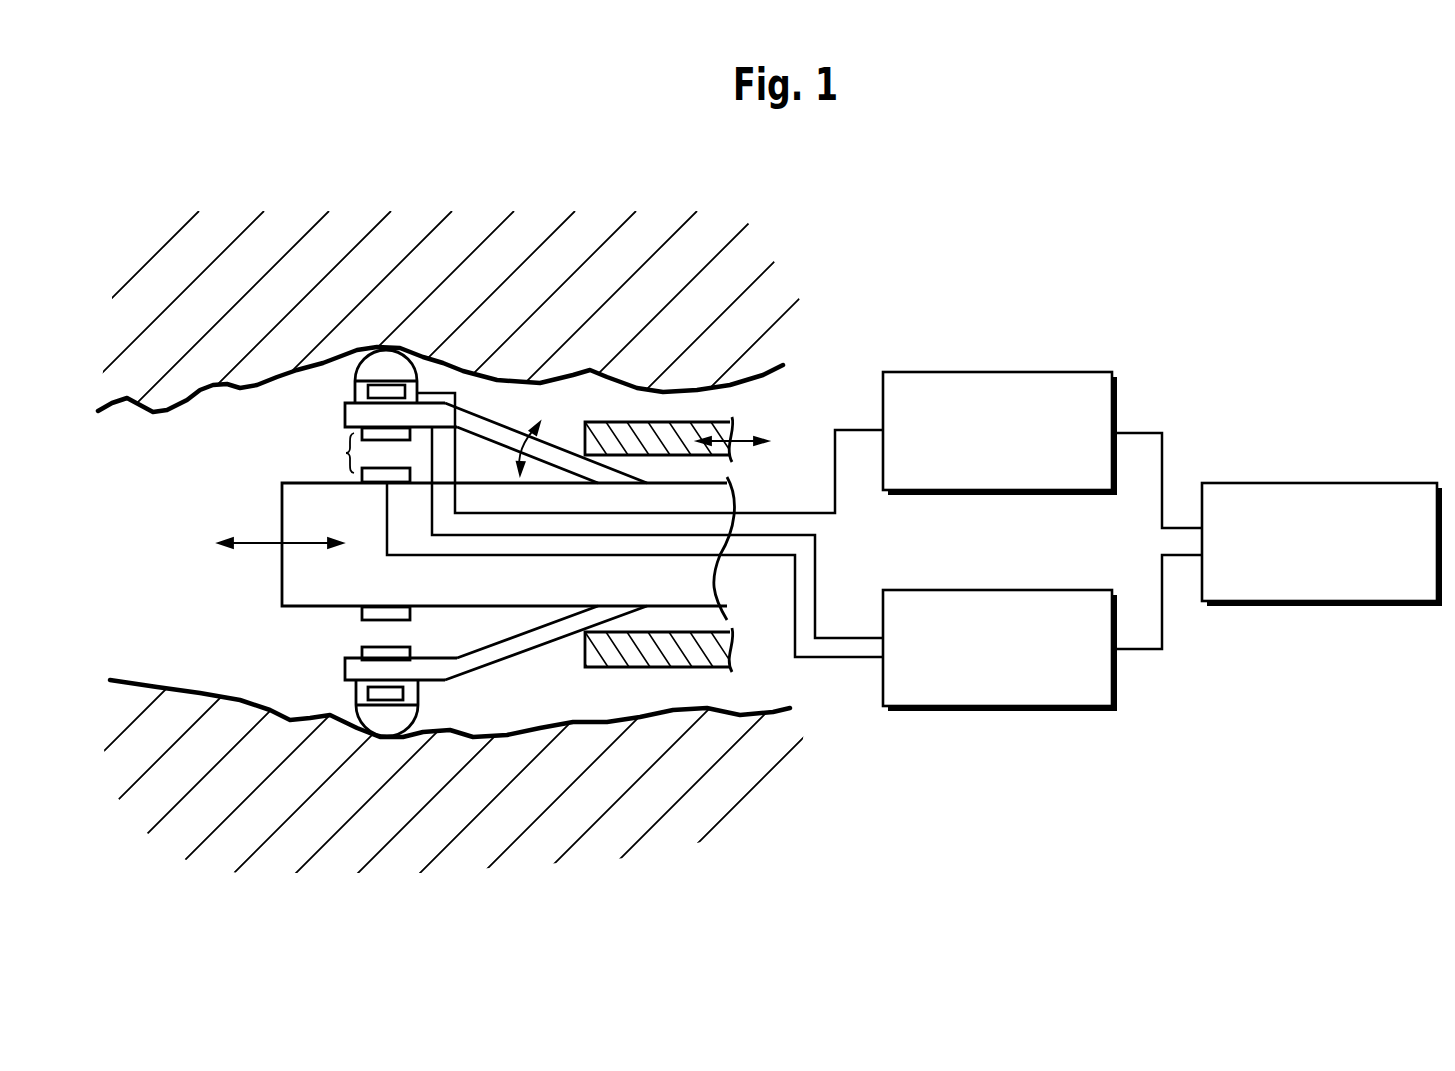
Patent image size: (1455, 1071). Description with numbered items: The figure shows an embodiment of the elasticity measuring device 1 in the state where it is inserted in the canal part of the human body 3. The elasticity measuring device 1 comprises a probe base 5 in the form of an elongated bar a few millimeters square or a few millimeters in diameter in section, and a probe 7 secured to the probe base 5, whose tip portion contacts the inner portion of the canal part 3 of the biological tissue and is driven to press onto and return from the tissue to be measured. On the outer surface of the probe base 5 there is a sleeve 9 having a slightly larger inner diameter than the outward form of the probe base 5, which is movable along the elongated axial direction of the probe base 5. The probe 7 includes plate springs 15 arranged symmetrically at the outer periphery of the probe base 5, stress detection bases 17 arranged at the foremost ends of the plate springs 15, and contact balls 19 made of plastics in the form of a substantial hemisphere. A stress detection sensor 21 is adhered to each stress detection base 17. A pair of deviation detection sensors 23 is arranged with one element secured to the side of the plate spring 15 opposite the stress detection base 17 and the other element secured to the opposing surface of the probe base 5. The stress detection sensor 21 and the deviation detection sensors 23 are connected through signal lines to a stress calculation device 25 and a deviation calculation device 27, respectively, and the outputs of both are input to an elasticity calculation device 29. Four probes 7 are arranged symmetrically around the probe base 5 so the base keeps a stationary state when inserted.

The elasticity measuring device 1 is at (905, 318).
The canal part of the human body 3 is at (217, 275).
The probe base 5 is at (290, 578).
The probe 7 is at (500, 397).
The sleeve 9 is at (726, 420).
The plate spring 15 is at (493, 422).
The stress detection base 17 is at (417, 383).
The contact ball 19 is at (375, 363).
The stress detection sensor 21 is at (368, 392).
The deviation detection sensor 23 is at (347, 453).
The stress calculation device 25 is at (1028, 493).
The deviation calculation device 27 is at (1037, 712).
The elasticity calculation device 29 is at (1350, 607).